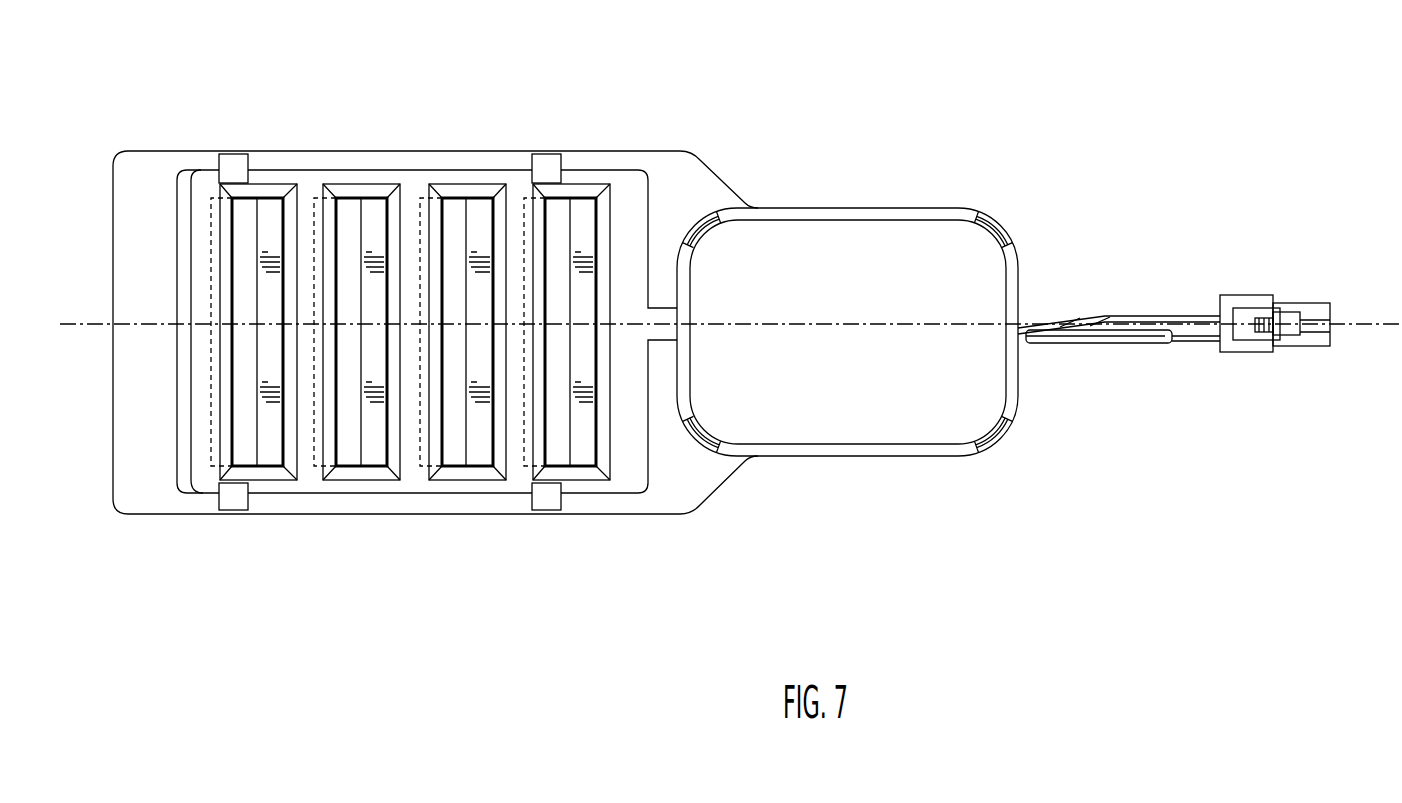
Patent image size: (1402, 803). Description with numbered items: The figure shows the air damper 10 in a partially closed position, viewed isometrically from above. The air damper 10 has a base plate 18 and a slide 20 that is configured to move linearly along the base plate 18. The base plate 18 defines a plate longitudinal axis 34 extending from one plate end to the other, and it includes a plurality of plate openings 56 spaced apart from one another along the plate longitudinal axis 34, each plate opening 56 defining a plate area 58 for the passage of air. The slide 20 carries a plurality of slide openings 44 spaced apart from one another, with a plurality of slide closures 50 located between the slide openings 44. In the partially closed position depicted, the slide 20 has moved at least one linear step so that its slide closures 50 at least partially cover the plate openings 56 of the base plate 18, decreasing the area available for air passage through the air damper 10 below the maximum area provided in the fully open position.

The air damper 10 is at (730, 301).
The base plate 18 is at (328, 163).
The slide 20 is at (618, 187).
The slide openings 44 is at (561, 279).
The slide closures 50 is at (208, 460).
The plate openings 56 is at (584, 208).
The plate area 58 is at (253, 251).
The plate longitudinal axis 34 is at (1348, 323).